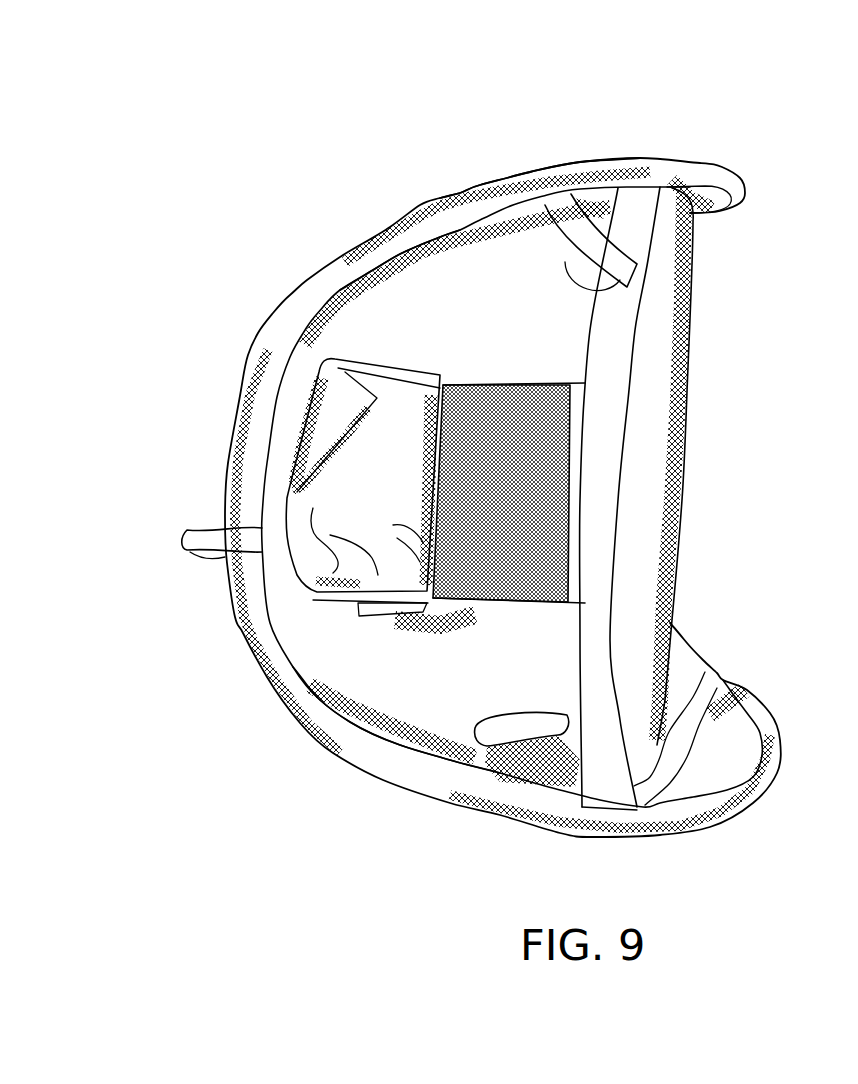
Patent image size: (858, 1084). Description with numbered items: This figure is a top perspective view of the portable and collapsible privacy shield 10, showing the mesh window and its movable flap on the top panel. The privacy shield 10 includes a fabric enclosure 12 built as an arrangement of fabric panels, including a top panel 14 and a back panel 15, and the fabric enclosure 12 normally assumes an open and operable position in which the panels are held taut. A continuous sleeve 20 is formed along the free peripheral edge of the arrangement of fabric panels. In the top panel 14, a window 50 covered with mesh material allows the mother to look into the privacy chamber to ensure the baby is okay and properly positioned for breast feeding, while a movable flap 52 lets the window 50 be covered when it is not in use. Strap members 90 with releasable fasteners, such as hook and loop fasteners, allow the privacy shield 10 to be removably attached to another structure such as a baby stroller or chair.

The privacy shield 10 is at (750, 140).
The fabric enclosure 12 is at (415, 310).
The top panel 14 is at (417, 707).
The back panel 15 is at (657, 505).
The continuous sleeve 20 is at (533, 190).
The window 50 is at (489, 568).
The movable flap 52 is at (325, 427).
The strap members 90 is at (578, 250).